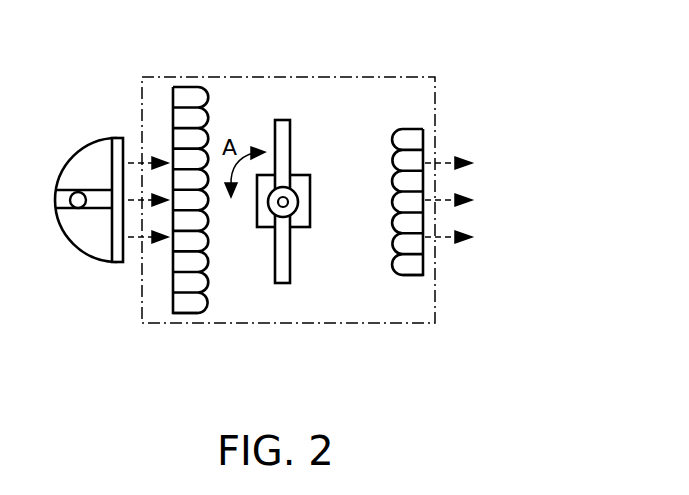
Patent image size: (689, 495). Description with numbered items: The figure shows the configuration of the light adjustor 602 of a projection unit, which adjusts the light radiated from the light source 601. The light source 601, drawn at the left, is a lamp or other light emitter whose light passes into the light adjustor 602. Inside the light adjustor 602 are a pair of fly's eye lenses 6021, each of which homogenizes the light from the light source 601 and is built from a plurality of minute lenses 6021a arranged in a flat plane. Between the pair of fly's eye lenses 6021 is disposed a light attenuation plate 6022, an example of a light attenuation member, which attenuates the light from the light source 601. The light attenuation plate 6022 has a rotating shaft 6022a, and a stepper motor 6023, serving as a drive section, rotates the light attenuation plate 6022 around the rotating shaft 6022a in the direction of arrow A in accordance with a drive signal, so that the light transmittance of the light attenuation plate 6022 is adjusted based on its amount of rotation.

The light source 601 is at (103, 148).
The light adjustor 602 is at (277, 78).
The fly's eye lens 6021 is at (325, 175).
The minute lens 6021a is at (392, 142).
The light attenuation plate 6022 is at (283, 284).
The rotating shaft 6022a is at (295, 203).
The stepper motor 6023 is at (303, 176).